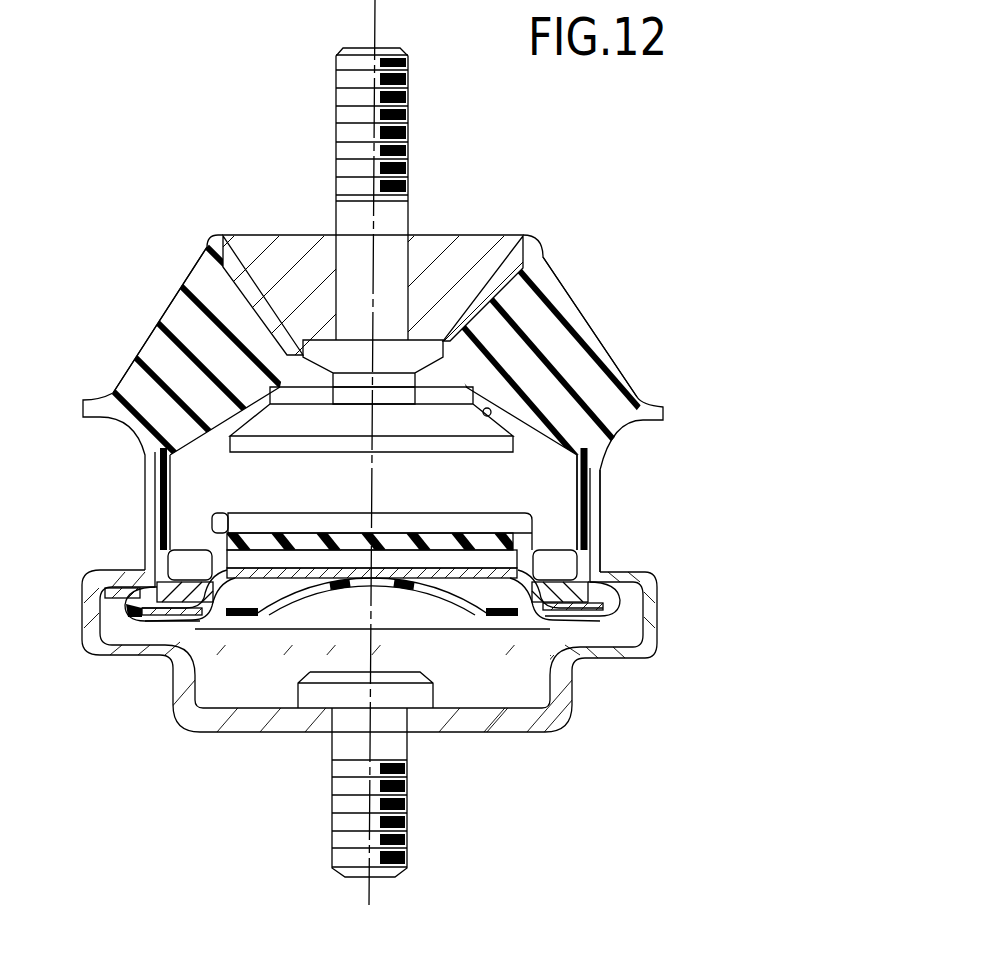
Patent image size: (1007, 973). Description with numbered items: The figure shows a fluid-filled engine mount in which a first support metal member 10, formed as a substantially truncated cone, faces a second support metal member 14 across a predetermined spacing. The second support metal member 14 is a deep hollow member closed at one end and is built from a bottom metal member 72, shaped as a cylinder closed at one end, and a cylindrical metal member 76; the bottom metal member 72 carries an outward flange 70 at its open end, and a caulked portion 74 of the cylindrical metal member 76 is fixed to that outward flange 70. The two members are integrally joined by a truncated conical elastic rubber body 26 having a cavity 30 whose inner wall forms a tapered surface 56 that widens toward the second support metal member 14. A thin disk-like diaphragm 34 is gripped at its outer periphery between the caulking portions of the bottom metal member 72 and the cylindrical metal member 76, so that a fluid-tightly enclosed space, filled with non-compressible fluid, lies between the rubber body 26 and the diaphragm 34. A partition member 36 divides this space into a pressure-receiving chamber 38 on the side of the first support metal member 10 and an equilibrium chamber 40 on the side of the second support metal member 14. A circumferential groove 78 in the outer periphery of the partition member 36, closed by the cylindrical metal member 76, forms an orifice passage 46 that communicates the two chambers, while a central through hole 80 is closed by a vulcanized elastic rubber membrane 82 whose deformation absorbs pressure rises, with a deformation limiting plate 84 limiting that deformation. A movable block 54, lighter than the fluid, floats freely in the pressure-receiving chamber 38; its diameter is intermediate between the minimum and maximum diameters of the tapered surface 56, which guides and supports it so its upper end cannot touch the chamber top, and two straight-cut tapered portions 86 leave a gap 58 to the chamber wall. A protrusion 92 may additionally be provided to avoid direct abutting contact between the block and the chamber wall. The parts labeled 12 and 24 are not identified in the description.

The first support metal member 10 is at (479, 226).
The upper fastening bolt 12 is at (345, 116).
The second support metal member 14 is at (537, 755).
The lower fastening bolt 24 is at (335, 838).
The elastic rubber body 26 is at (600, 338).
The cavity 30 is at (304, 393).
The diaphragm 34 is at (300, 600).
The partition member 36 is at (598, 400).
The pressure-receiving chamber 38 is at (195, 505).
The equilibrium chamber 40 is at (237, 600).
The orifice passage 46 is at (566, 558).
The movable block 54 is at (230, 463).
The tapered surface 56 is at (172, 368).
The gap 58 is at (503, 425).
The outward flange 70 is at (122, 632).
The bottom metal member 72 is at (467, 722).
The caulked portion 74 is at (82, 611).
The cylindrical metal member 76 is at (595, 493).
The circumferential groove 78 is at (178, 546).
The through hole 80 is at (258, 521).
The elastic rubber membrane 82 is at (322, 540).
The deformation limiting plate 84 is at (172, 642).
The tapered portion 86 is at (490, 410).
The protrusion 92 is at (392, 398).